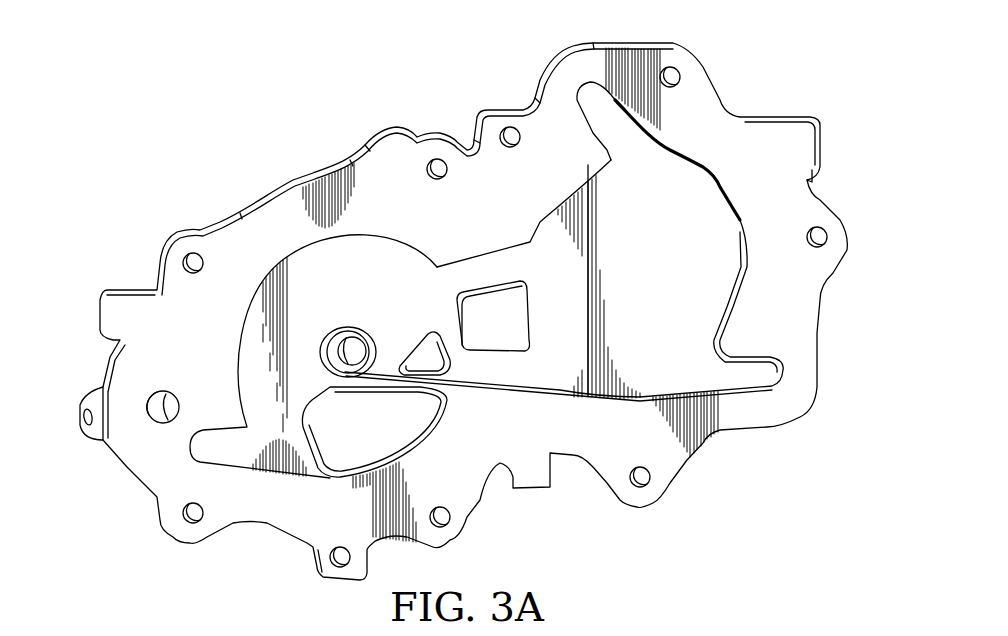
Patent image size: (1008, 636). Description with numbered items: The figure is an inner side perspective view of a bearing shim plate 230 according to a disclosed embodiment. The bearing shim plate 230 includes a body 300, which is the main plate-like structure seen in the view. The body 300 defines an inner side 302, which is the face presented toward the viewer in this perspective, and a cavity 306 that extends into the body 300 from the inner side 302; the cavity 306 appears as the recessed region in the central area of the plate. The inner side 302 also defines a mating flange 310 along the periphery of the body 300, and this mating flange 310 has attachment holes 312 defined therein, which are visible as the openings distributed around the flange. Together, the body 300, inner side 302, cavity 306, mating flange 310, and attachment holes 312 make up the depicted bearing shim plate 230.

The bearing shim plate 230 is at (267, 114).
The body 300 is at (837, 209).
The inner side 302 is at (220, 240).
The cavity 306 is at (386, 235).
The mating flange 310 is at (720, 123).
The attachment holes 312 is at (681, 70).